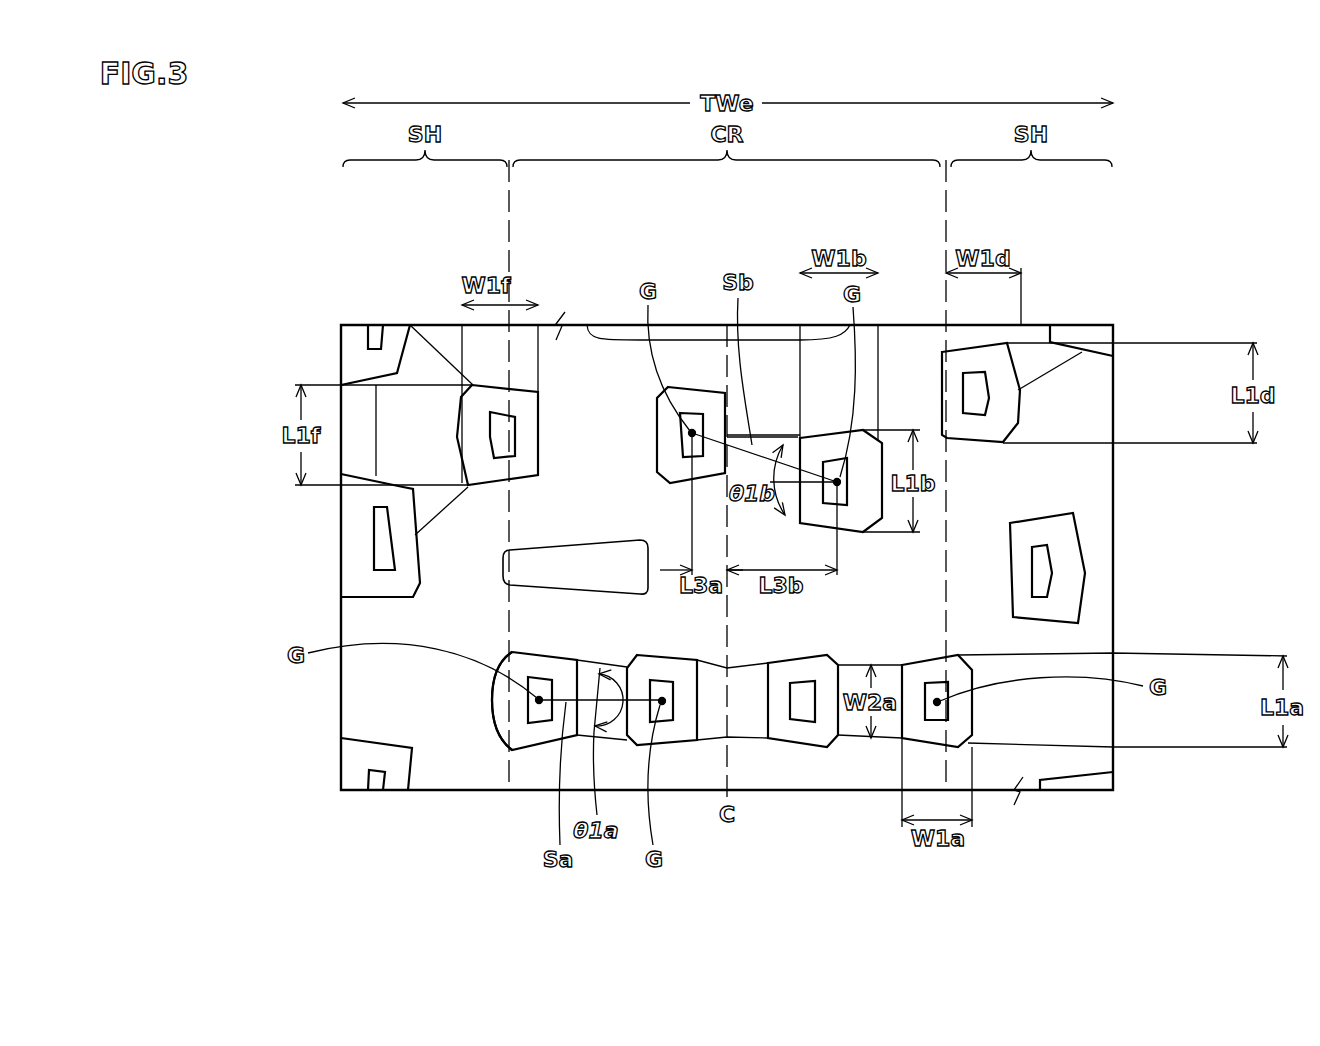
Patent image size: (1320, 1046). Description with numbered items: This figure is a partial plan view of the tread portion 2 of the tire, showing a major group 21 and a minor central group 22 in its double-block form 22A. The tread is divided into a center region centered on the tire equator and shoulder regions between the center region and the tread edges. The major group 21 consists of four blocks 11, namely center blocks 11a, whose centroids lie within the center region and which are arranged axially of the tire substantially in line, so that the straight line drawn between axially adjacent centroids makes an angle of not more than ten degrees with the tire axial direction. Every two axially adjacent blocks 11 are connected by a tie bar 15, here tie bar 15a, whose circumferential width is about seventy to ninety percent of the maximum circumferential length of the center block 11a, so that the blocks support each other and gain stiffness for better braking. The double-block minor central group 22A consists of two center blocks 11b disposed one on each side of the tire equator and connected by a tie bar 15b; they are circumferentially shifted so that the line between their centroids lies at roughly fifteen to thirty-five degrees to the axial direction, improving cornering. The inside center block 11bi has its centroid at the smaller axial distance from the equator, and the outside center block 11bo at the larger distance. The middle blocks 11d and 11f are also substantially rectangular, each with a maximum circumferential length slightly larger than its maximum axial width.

The tread portion 2 is at (1065, 306).
The block 11 is at (507, 717).
The center block 11a is at (679, 720).
The center block 11b is at (783, 360).
The inside center block 11bi is at (702, 405).
The outside center block 11bo is at (868, 487).
The middle block 11d is at (1002, 410).
The middle block 11f is at (476, 433).
The tie bar 15 is at (802, 537).
The tie bar 15a is at (749, 720).
The tie bar 15b is at (768, 448).
The major group 21 is at (483, 695).
The minor central group 22 is at (596, 338).
The double-block minor central group 22A is at (652, 430).